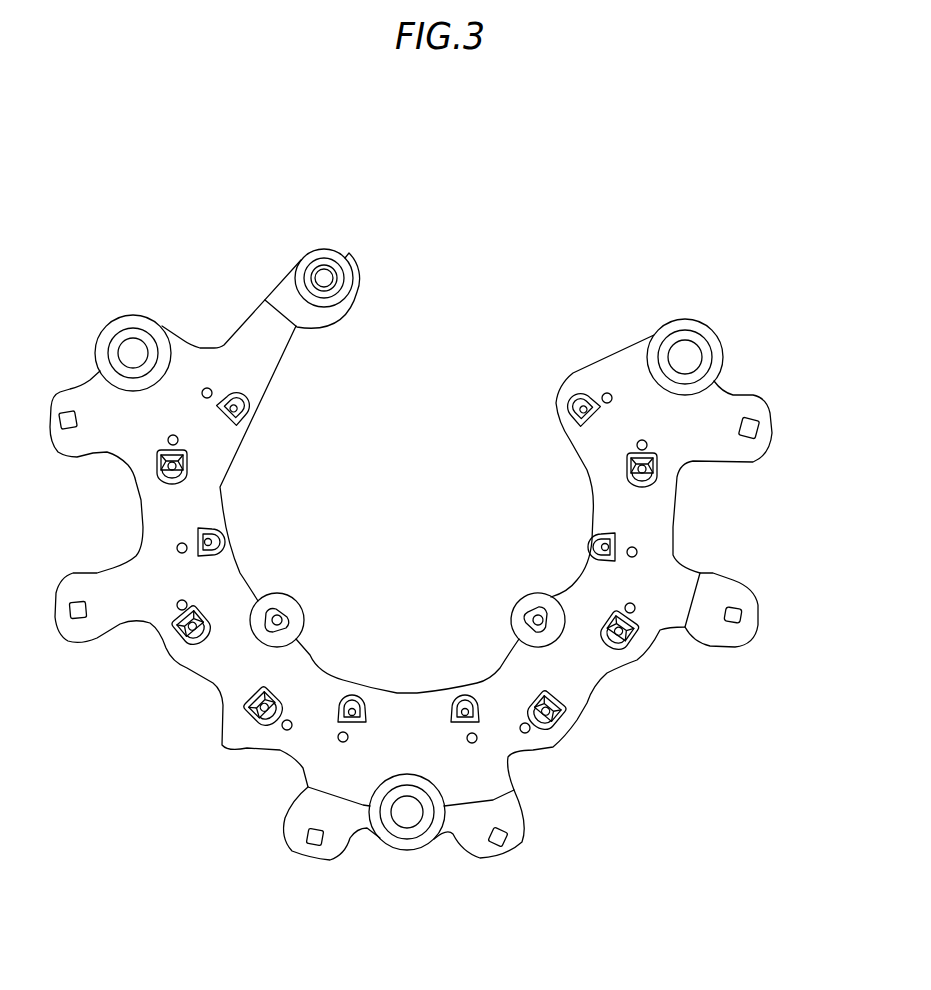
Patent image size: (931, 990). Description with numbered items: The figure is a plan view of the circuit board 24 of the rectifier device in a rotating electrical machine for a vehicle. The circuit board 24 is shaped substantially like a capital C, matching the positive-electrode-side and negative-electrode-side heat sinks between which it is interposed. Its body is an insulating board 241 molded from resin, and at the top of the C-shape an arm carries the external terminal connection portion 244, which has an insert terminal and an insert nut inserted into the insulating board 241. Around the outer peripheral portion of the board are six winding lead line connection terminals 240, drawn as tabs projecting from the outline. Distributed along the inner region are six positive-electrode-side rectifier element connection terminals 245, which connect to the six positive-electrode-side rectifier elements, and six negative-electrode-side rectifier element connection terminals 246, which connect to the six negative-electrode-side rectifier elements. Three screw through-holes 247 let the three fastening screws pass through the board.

The circuit board 24 is at (444, 556).
The winding lead line connection terminal 240 is at (755, 423).
The insulating board 241 is at (660, 555).
The external terminal connection portion 244 is at (320, 249).
The positive-electrode-side rectifier element connection terminal 245 is at (250, 413).
The negative-electrode-side rectifier element connection terminal 246 is at (160, 478).
The screw through-hole 247 is at (128, 353).